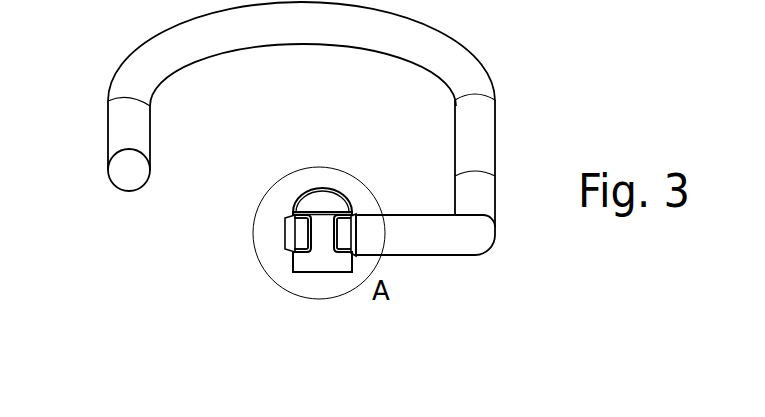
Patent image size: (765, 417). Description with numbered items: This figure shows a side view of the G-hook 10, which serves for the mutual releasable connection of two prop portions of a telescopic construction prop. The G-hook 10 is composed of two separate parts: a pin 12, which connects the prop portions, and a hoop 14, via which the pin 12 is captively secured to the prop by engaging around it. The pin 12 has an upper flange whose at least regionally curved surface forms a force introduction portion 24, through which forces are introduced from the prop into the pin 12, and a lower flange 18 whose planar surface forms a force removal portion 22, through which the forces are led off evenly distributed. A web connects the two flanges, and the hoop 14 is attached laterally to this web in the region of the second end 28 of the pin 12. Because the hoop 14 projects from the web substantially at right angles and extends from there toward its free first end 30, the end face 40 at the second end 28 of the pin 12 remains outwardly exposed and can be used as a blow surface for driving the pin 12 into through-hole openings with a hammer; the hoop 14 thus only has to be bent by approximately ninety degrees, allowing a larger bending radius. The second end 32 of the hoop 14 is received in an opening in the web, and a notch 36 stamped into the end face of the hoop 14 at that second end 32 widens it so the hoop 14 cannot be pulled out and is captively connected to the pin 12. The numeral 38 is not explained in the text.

The G-hook 10 is at (148, 242).
The pin 12 is at (373, 182).
The hoop 14 is at (430, 44).
The lower flange 18 is at (243, 412).
The force removal portion 22 is at (312, 272).
The force introduction portion 24 is at (318, 186).
The second end of the pin 28 is at (344, 233).
The free first end of the hoop 30 is at (120, 172).
The second end of the hoop 32 is at (292, 238).
The notch 36 is at (301, 233).
The insert 38 is at (292, 218).
The end face 40 is at (322, 258).